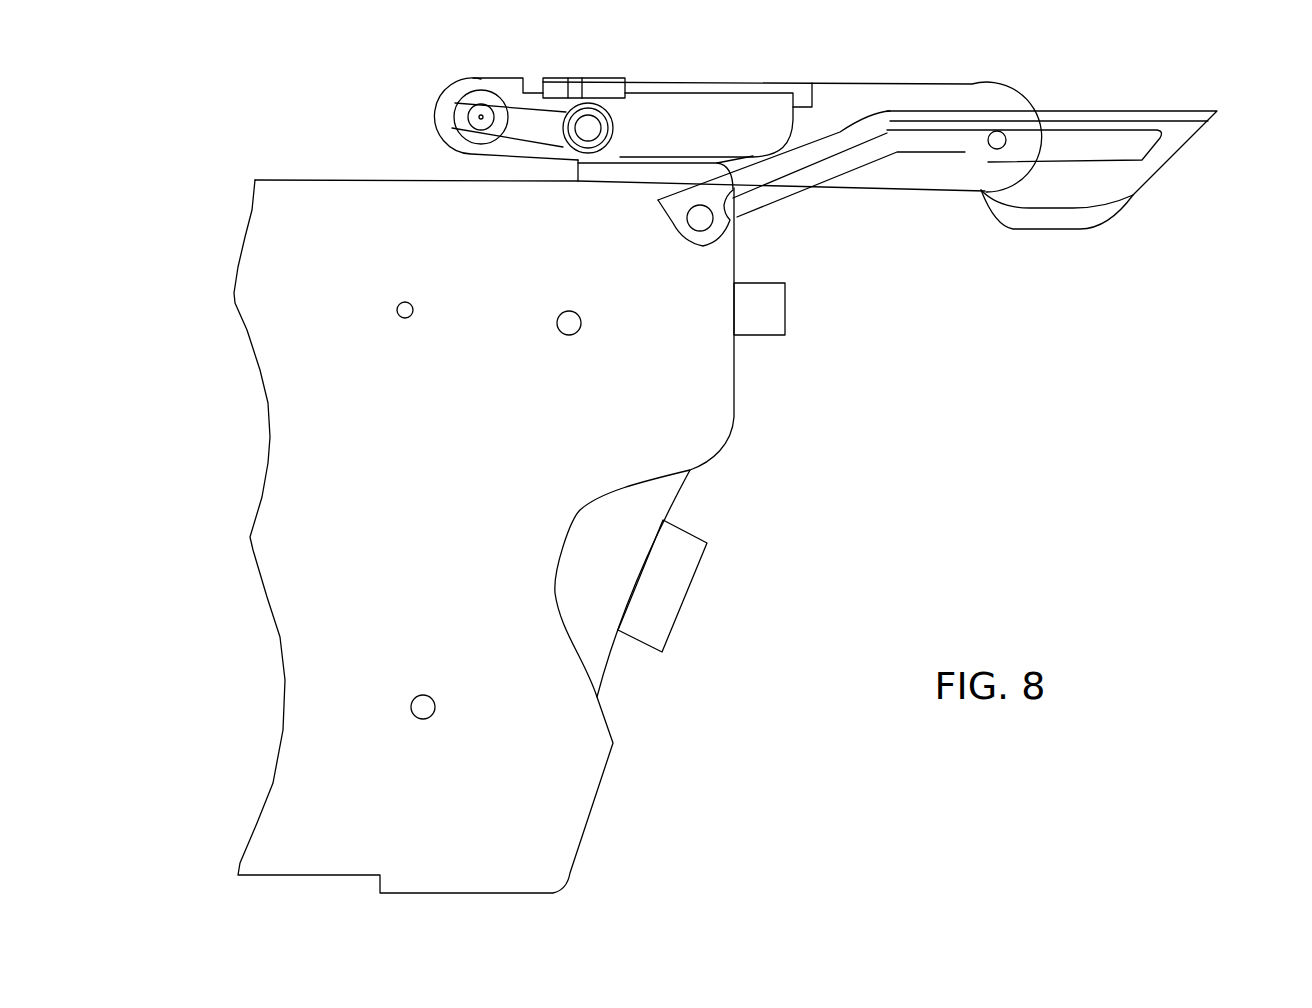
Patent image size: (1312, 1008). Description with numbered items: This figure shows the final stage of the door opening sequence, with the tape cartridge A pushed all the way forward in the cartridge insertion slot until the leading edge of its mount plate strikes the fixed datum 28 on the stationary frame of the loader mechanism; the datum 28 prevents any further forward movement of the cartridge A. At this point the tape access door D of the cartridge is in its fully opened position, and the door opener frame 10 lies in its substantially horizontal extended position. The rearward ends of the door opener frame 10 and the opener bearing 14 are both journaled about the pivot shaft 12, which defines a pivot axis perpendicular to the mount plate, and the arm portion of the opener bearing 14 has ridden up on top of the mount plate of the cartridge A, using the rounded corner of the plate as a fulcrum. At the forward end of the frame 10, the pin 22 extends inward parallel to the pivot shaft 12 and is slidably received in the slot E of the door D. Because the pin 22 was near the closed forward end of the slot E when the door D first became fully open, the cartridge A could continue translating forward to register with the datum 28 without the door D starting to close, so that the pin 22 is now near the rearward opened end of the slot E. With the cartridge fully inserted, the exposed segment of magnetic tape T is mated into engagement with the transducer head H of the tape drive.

The door opener frame 10 is at (885, 87).
The pivot shaft 12 is at (476, 116).
The opener bearing 14 is at (617, 130).
The pin 22 is at (993, 150).
The fixed datum 28 is at (785, 312).
The tape cartridge A is at (325, 268).
The tape access door D is at (1148, 110).
The slot E is at (1087, 147).
The transducer head H is at (658, 587).
The magnetic tape T is at (608, 665).